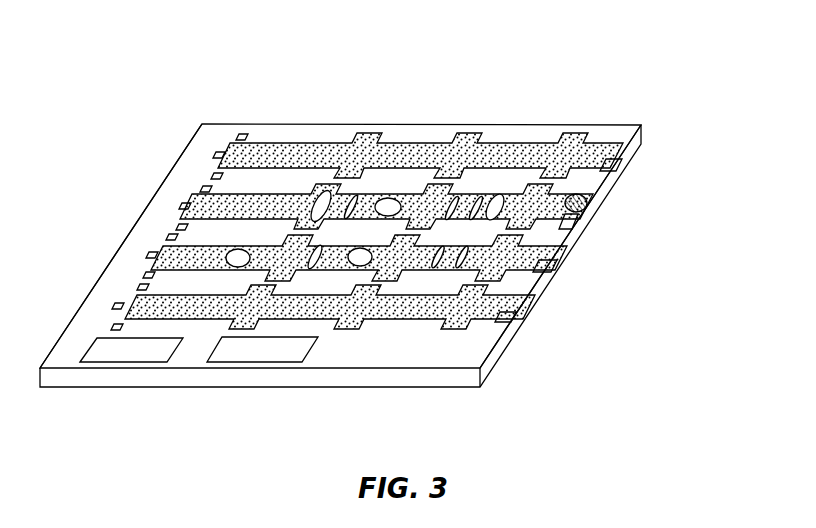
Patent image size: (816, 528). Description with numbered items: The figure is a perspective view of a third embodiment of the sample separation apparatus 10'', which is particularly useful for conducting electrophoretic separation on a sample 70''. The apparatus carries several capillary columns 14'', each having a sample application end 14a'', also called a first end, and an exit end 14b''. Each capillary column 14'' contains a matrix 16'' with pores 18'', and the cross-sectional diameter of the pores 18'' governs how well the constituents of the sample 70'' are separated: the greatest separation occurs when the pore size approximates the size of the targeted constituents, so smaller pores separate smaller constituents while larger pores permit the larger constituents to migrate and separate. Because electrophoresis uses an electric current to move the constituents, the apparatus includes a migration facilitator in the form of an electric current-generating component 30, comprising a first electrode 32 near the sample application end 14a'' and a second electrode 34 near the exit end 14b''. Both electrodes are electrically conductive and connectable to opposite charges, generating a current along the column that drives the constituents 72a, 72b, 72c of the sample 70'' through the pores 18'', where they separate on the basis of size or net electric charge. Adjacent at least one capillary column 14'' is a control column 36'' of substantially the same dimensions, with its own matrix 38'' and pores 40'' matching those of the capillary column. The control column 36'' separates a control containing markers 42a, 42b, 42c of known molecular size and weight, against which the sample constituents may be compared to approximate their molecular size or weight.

The sample separation apparatus 10'' is at (357, 258).
The capillary column 14'' is at (381, 307).
The sample application end 14a'' is at (622, 230).
The exit end 14b'' is at (136, 212).
The matrix 16'' is at (610, 266).
The pores 18'' is at (420, 253).
The electric current-generating component 30 is at (215, 157).
The first electrode 32 is at (618, 163).
The second electrode 34 is at (220, 153).
The control column 36'' is at (365, 328).
The matrix 38'' is at (386, 321).
The pores 40'' is at (239, 348).
The marker 42a is at (248, 252).
The marker 42b is at (392, 199).
The marker 42c is at (502, 200).
The sample 70'' is at (633, 209).
The constituent 72a is at (328, 195).
The constituent 72b is at (455, 198).
The constituent 72c is at (480, 200).